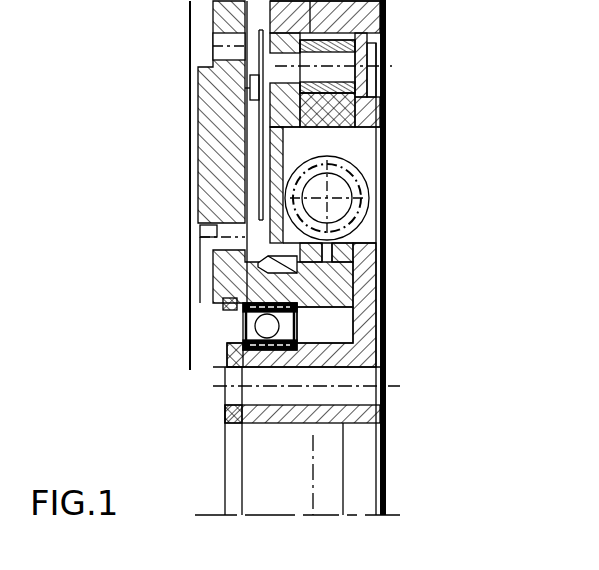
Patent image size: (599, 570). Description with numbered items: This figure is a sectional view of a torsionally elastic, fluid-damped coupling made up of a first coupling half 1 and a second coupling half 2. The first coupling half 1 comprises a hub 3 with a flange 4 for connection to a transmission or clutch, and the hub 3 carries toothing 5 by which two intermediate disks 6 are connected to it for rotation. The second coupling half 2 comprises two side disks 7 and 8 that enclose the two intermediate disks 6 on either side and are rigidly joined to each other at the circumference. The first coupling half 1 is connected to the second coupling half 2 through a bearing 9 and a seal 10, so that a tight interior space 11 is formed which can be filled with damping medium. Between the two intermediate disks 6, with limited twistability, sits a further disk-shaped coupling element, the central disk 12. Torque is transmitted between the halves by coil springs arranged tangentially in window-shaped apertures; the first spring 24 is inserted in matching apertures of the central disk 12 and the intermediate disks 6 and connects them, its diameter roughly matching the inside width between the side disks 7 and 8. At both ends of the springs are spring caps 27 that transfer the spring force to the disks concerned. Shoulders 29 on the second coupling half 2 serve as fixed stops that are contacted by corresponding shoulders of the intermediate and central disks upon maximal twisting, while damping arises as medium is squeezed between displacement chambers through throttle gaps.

The first coupling half 1 is at (175, 110).
The second coupling half 2 is at (404, 367).
The hub 3 is at (238, 280).
The flange 4 is at (225, 137).
The toothing 5 is at (360, 318).
The intermediate disks 6 is at (355, 117).
The side disk 7 is at (345, 318).
The side disk 8 is at (270, 130).
The bearing 9 is at (243, 316).
The seal 10 is at (258, 272).
The interior space 11 is at (350, 104).
The central disk 12 is at (340, 120).
The first spring 24 is at (358, 213).
The spring caps 27 is at (348, 172).
The shoulders 29 is at (387, 26).